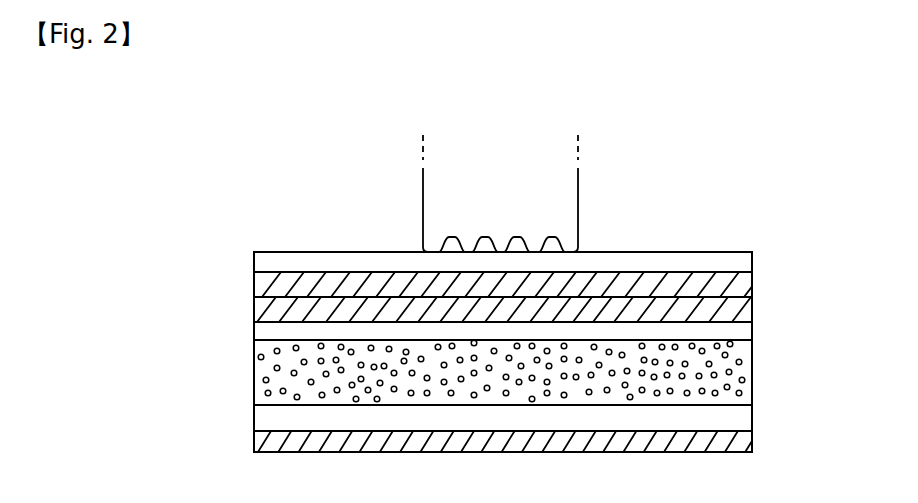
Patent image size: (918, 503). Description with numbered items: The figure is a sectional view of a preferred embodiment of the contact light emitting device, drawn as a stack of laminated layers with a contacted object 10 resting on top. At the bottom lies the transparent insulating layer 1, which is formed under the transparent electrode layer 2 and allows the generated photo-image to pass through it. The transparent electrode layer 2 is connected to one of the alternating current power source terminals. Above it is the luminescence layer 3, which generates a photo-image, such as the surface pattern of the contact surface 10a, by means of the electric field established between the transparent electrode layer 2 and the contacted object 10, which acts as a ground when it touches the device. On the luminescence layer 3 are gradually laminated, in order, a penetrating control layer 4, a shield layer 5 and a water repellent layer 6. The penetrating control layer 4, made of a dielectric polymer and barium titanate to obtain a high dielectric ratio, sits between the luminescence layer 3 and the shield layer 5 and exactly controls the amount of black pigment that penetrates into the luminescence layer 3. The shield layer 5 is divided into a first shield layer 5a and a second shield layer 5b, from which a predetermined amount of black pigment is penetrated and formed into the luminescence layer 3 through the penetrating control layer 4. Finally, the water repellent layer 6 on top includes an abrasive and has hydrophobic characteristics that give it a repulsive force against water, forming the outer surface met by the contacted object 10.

The transparent insulating layer 1 is at (752, 435).
The transparent electrode layer 2 is at (752, 410).
The luminescence layer 3 is at (752, 367).
The penetrating control layer 4 is at (752, 328).
The shield layer 5 is at (767, 272).
The first shield layer 5a is at (262, 313).
The second shield layer 5b is at (262, 283).
The water repellent layer 6 is at (752, 262).
The contacted object 10 is at (578, 207).
The contact surface 10a is at (537, 251).